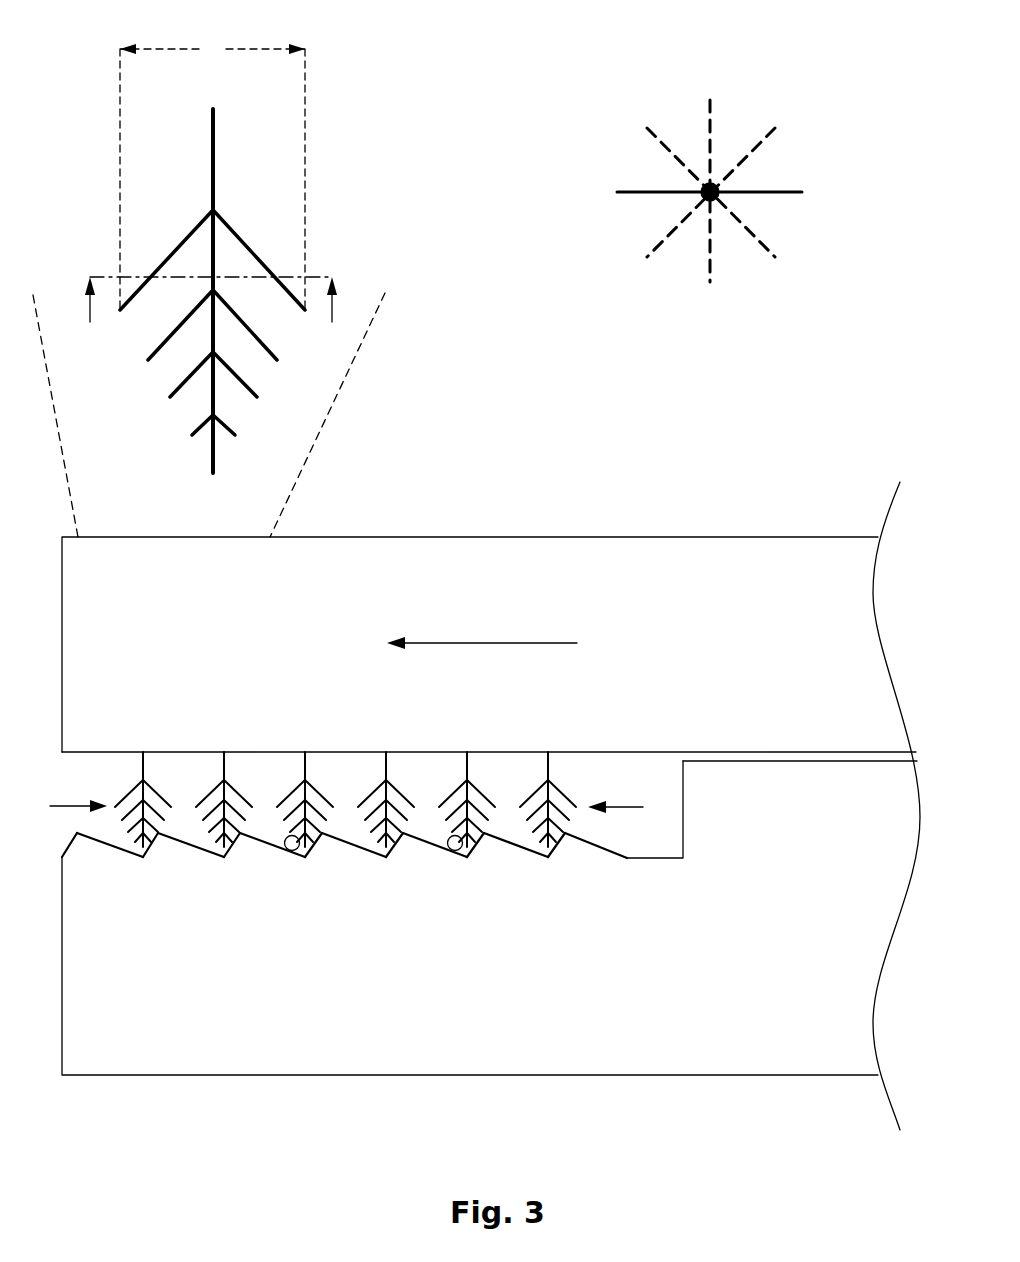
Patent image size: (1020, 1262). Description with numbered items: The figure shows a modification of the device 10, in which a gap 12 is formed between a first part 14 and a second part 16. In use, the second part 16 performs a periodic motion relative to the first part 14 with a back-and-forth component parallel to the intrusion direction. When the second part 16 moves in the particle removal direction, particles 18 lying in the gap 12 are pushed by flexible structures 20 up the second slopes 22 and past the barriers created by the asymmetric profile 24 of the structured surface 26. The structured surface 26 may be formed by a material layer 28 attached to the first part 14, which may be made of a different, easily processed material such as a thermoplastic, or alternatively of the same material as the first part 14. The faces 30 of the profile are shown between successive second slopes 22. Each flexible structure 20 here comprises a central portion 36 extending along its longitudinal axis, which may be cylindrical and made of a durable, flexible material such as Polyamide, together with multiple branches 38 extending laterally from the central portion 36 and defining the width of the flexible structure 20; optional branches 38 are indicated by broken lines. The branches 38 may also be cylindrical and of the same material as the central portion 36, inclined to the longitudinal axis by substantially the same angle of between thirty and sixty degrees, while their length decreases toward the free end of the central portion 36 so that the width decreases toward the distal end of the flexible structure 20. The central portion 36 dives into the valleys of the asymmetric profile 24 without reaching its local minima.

The device 10 is at (690, 450).
The gap 12 is at (276, 807).
The first part 14 is at (330, 1075).
The second part 16 is at (628, 537).
The particles 18 is at (292, 851).
The flexible structure 20 is at (224, 775).
The second slopes 22 is at (132, 853).
The asymmetric profile 24 is at (100, 785).
The structured surface 26 is at (590, 782).
The material layer 28 is at (653, 862).
The steep tooth face 30 is at (68, 848).
The central portion 36 is at (213, 155).
The branches 38 is at (180, 243).